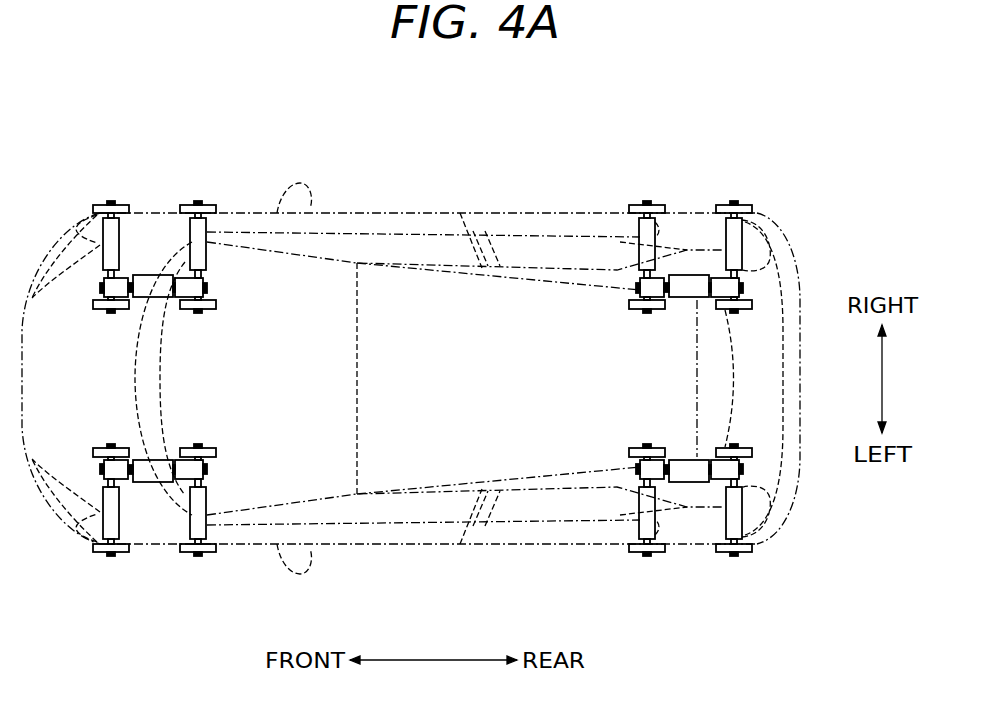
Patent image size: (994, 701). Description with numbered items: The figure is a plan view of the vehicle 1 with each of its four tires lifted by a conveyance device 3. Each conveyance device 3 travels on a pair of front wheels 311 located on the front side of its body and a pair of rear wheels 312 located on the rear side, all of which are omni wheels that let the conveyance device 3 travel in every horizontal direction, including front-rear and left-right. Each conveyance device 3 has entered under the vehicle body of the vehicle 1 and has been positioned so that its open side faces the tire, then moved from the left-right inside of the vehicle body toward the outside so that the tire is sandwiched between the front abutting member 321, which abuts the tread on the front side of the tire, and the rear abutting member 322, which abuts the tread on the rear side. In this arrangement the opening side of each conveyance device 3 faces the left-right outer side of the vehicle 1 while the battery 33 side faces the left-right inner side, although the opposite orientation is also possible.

The vehicle 1 is at (518, 157).
The conveyance device 3 is at (222, 193).
The front wheel 311 is at (103, 206).
The rear wheel 312 is at (189, 206).
The front abutting member 321 is at (108, 247).
The rear abutting member 322 is at (200, 250).
The battery 33 is at (160, 292).